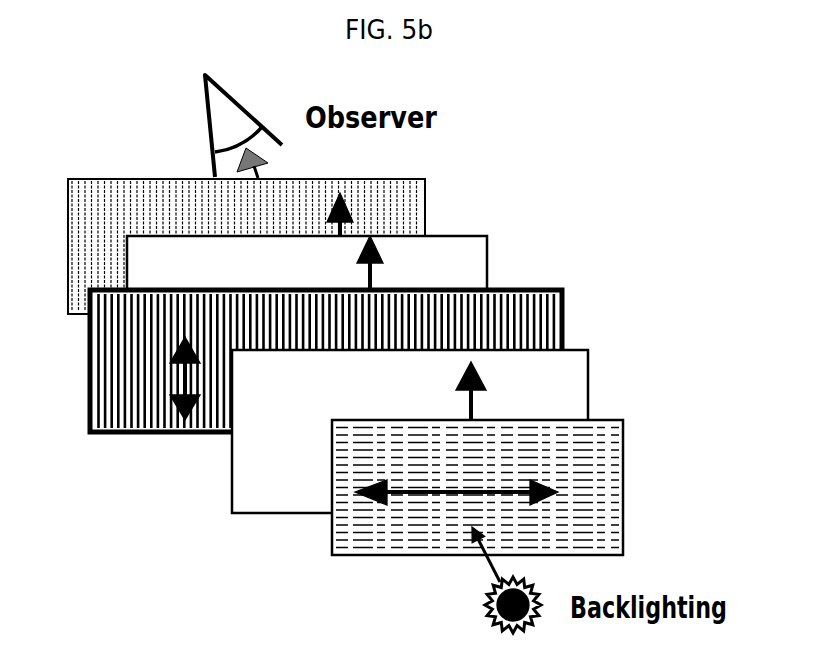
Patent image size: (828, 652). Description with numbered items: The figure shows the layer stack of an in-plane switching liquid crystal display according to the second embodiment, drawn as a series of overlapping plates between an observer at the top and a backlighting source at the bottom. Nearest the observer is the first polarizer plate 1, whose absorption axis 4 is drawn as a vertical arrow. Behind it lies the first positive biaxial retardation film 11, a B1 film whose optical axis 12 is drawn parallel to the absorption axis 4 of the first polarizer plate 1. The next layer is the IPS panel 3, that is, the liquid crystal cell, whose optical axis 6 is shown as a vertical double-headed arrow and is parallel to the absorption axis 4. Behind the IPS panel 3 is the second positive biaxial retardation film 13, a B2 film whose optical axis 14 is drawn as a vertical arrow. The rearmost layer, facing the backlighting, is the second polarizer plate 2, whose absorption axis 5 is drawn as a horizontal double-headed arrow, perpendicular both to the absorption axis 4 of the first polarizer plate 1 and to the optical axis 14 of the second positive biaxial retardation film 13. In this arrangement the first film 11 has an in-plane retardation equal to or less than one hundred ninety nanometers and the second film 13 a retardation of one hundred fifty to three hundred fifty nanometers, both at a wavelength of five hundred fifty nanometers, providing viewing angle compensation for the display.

The first polarizer plate 1 is at (246, 246).
The second polarizer plate 2 is at (477, 487).
The IPS panel 3 is at (326, 361).
The absorption axis of the first polarizer plate 4 is at (357, 214).
The absorption axis of the second polarizer plate 5 is at (456, 505).
The optical axis of the liquid crystal cell 6 is at (158, 378).
The first positive biaxial retardation film 11 is at (307, 267).
The optical axis of the first positive biaxial retardation film 12 is at (400, 263).
The second positive biaxial retardation film 13 is at (410, 431).
The optical axis of the second positive biaxial retardation film 14 is at (513, 391).